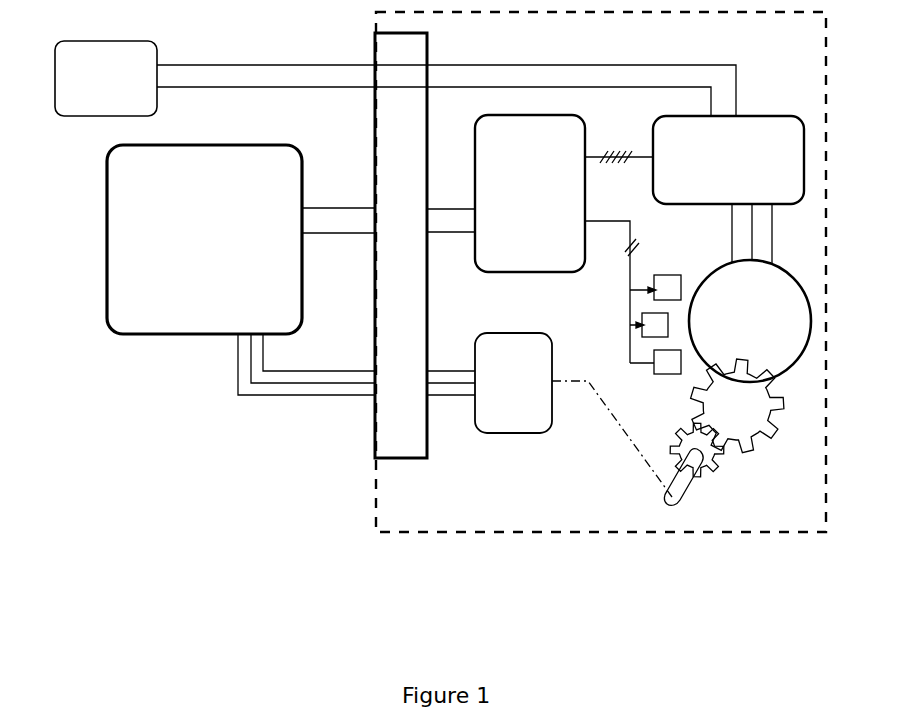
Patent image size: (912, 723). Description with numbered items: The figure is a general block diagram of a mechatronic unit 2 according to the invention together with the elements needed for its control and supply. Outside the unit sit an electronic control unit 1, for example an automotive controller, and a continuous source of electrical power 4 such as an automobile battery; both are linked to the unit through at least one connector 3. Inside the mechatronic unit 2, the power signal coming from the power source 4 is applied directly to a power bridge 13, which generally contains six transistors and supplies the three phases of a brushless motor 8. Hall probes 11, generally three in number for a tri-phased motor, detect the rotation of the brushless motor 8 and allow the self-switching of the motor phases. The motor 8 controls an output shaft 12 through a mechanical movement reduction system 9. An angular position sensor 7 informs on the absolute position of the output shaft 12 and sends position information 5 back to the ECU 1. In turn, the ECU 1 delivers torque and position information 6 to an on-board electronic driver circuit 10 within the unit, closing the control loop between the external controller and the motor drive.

The electronic control unit 1 is at (122, 295).
The mechatronic unit 2 is at (620, 525).
The connector 3 is at (400, 445).
The continuous source of electrical power 4 is at (102, 97).
The position information 5 is at (262, 406).
The torque and position information 6 is at (326, 246).
The angular position sensor 7 is at (513, 421).
The brushless motor 8 is at (790, 353).
The mechanical movement reduction system 9 is at (718, 482).
The on-board electronic driver circuit 10 is at (521, 151).
The Hall probes 11 is at (655, 372).
The output shaft 12 is at (688, 500).
The power bridge 13 is at (772, 147).